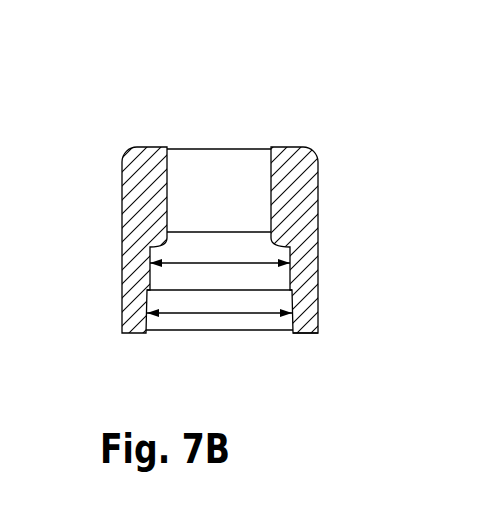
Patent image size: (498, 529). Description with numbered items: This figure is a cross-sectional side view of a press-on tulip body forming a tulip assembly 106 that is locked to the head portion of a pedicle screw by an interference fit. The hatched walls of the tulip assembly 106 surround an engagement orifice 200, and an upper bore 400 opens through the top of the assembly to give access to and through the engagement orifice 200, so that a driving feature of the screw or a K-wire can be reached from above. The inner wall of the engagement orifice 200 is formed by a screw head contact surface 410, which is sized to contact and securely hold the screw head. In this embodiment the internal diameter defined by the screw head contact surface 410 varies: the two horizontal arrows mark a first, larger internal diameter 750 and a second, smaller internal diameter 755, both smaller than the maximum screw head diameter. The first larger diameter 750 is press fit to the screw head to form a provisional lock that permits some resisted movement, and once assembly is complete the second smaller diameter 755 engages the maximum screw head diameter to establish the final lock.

The tulip assembly 106 is at (249, 239).
The upper bore 400 is at (251, 126).
The engagement orifice 200 is at (168, 357).
The screw head contact surface 410 is at (292, 331).
The first internal diameter 750 is at (202, 312).
The second internal diameter 755 is at (240, 260).